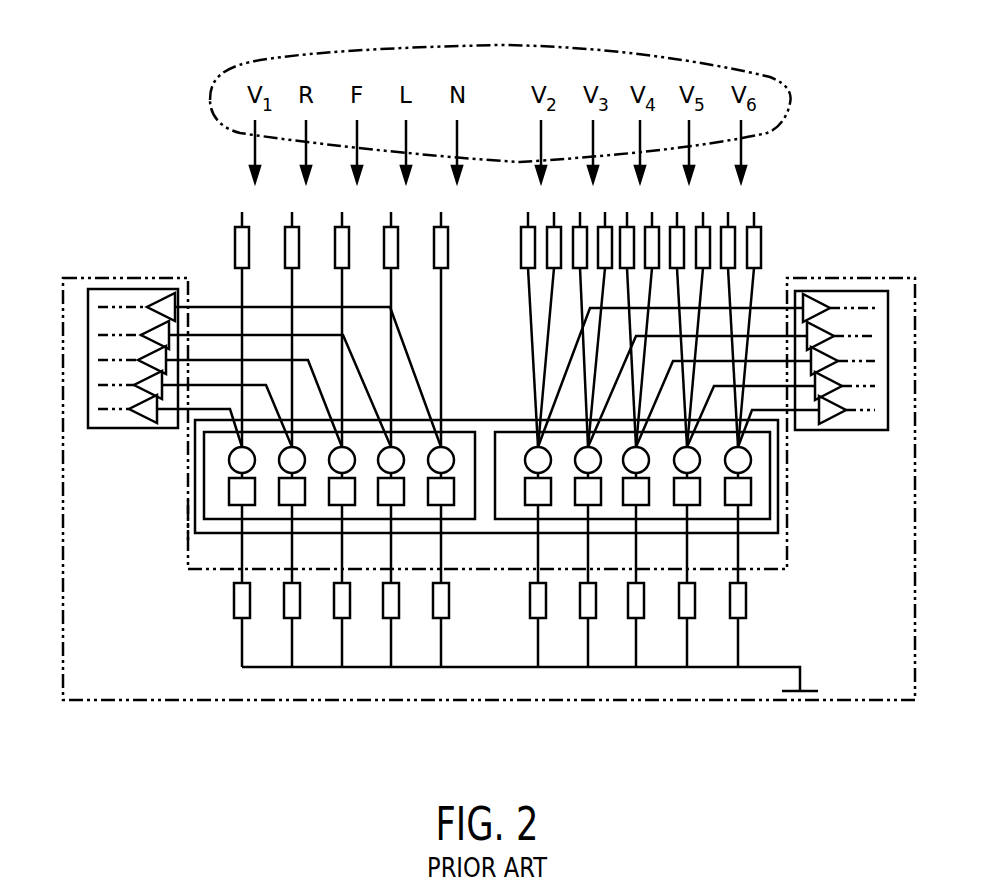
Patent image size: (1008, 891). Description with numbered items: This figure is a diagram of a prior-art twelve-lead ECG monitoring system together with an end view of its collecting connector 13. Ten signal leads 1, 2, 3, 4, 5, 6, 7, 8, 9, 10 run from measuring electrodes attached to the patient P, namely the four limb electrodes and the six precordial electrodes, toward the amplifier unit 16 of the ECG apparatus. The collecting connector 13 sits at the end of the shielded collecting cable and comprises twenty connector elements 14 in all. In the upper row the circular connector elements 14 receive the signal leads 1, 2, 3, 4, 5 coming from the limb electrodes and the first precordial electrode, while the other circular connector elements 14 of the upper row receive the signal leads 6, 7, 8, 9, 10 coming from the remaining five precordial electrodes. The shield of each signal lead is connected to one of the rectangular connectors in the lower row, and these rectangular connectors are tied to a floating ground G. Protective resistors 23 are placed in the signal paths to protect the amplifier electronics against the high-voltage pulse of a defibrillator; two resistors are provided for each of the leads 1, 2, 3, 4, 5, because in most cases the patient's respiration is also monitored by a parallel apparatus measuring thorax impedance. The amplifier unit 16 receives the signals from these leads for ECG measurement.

The patient P is at (493, 46).
The floating ground G is at (806, 690).
The signal lead 1 is at (440, 292).
The signal lead 2 is at (390, 292).
The signal lead 3 is at (341, 292).
The signal lead 4 is at (291, 292).
The signal lead 5 is at (240, 293).
The signal lead 6 is at (750, 293).
The signal lead 7 is at (690, 262).
The signal lead 8 is at (640, 262).
The signal lead 9 is at (602, 285).
The signal lead 10 is at (550, 284).
The collecting connector 13 is at (200, 512).
The connector element 14 is at (332, 463).
The amplifier unit 16 is at (112, 293).
The protective resistor 23 is at (238, 247).